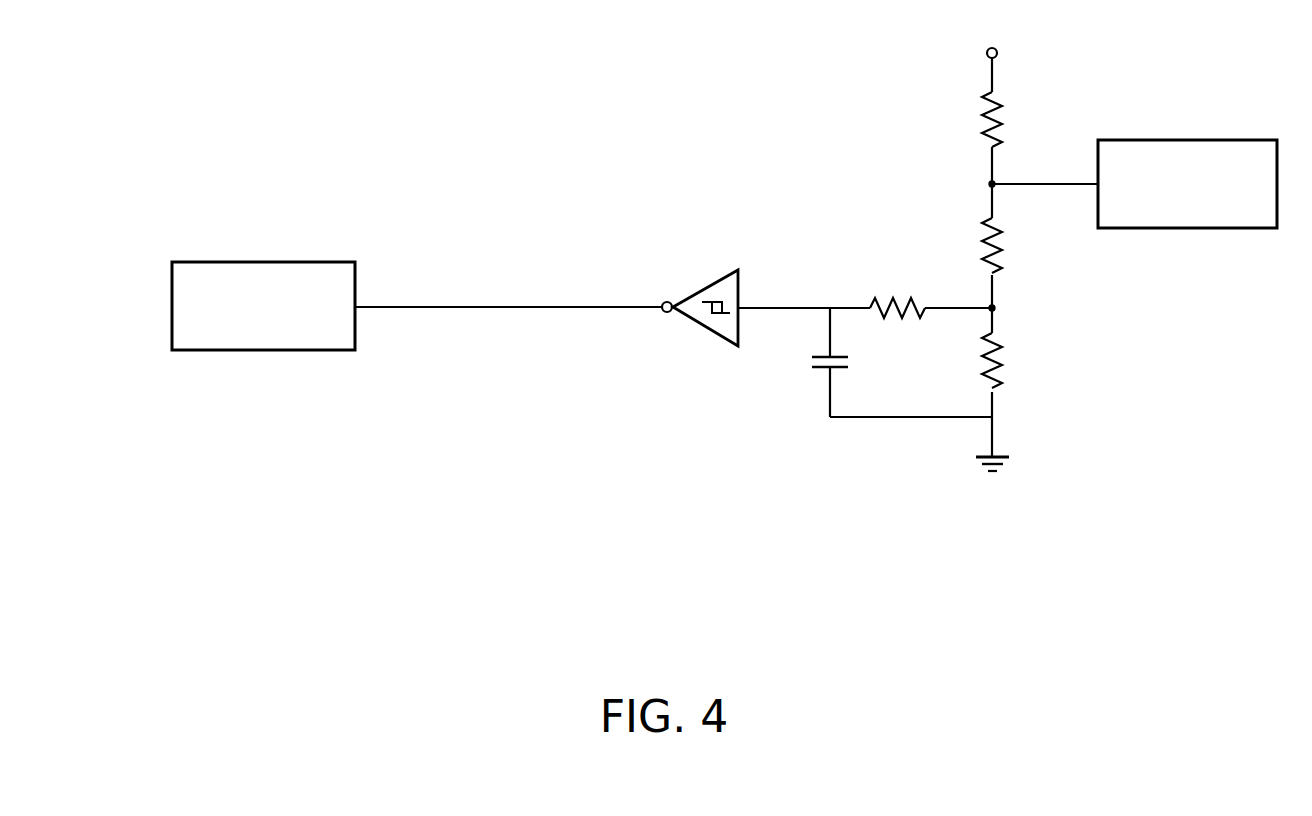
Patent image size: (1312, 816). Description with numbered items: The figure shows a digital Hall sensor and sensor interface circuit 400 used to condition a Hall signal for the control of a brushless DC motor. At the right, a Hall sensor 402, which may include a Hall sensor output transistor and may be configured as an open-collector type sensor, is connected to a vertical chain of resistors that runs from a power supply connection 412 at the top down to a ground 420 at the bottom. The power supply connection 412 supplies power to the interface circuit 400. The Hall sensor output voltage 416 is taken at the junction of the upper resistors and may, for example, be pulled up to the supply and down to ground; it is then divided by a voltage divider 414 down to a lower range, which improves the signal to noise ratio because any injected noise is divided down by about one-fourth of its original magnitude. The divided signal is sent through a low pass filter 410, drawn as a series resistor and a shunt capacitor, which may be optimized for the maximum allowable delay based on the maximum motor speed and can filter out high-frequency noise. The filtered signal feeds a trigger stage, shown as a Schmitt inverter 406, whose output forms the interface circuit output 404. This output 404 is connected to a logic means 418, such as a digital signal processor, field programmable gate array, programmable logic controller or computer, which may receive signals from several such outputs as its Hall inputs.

The Hall sensor interface circuit 400 is at (608, 588).
The Hall sensor 402 is at (1215, 140).
The interface circuit output 404 is at (523, 306).
The Schmitt inverter 406 is at (706, 333).
The low pass filter 410 is at (925, 312).
The power supply connection 412 is at (996, 66).
The voltage divider 414 is at (997, 311).
The Hall sensor output voltage 416 is at (1055, 183).
The logic means 418 is at (265, 351).
The ground 420 is at (1009, 466).